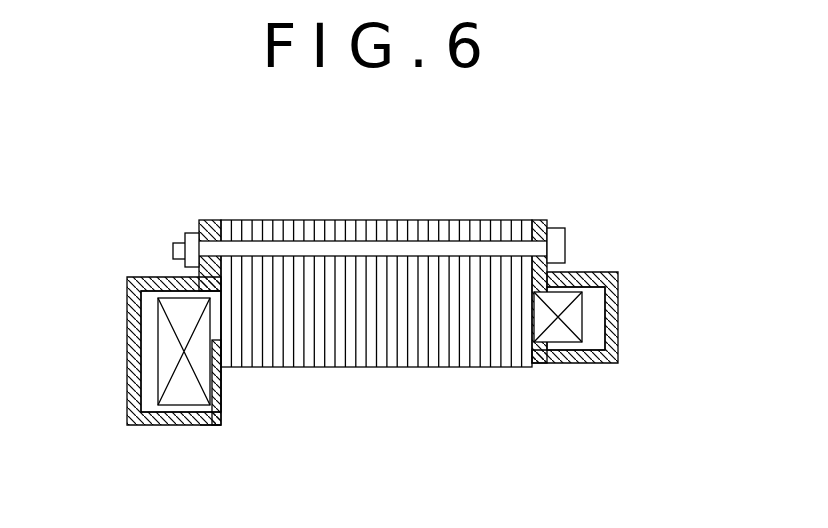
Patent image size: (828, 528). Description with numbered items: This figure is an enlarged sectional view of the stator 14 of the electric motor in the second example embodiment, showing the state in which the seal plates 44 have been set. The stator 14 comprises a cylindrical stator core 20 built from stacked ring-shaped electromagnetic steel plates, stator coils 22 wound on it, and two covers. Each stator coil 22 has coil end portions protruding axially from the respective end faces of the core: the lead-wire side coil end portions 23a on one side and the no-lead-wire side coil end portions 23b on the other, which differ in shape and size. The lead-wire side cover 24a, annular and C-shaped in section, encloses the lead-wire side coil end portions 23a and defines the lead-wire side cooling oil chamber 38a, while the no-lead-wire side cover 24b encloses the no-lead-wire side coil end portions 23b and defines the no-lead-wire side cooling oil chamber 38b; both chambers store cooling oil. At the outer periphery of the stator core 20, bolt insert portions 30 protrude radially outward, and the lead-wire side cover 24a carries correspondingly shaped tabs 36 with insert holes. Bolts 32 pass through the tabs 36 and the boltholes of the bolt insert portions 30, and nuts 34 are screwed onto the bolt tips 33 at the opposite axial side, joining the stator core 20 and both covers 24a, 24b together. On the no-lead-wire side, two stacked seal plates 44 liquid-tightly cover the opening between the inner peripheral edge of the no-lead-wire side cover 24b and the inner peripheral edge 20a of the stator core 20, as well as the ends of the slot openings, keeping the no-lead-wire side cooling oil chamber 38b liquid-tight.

The stator 14 is at (388, 312).
The stator core 20 is at (383, 221).
The inner peripheral edge of the stator core 20a is at (221, 369).
The stator coil 22 is at (582, 292).
The lead-wire side coil end portion 23a is at (585, 327).
The no-lead-wire side coil end portion 23b is at (160, 357).
The lead-wire side cover 24a is at (618, 277).
The no-lead-wire side cover 24b is at (127, 278).
The bolt insert portion 30 is at (320, 220).
The bolt 32 is at (562, 228).
The bolt tip 33 is at (172, 250).
The nut 34 is at (190, 233).
The tab 36 is at (211, 220).
The lead-wire side cooling oil chamber 38a is at (592, 311).
The no-lead-wire side cooling oil chamber 38b is at (148, 317).
The seal plate 44 is at (210, 427).